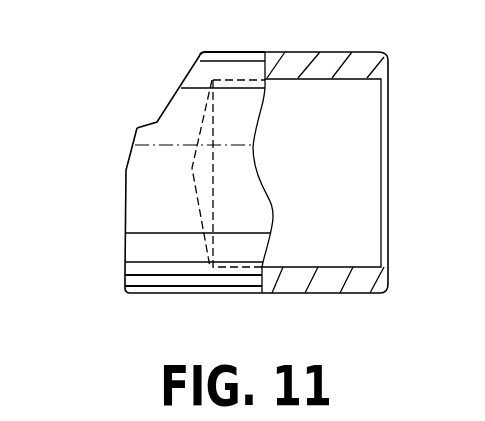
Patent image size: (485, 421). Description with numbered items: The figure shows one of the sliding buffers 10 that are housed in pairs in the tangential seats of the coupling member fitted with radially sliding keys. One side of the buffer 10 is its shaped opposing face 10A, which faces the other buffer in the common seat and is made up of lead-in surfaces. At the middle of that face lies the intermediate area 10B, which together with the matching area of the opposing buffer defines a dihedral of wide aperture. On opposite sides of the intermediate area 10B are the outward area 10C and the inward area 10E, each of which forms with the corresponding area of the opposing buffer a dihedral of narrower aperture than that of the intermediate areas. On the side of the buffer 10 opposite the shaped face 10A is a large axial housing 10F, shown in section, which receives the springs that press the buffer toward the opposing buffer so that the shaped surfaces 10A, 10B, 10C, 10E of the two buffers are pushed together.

The sliding buffer 10 is at (223, 295).
The opposing face 10A is at (125, 243).
The intermediate area 10B is at (150, 118).
The outward area 10C is at (187, 75).
The inward area 10E is at (128, 162).
The axial housing 10F is at (363, 110).